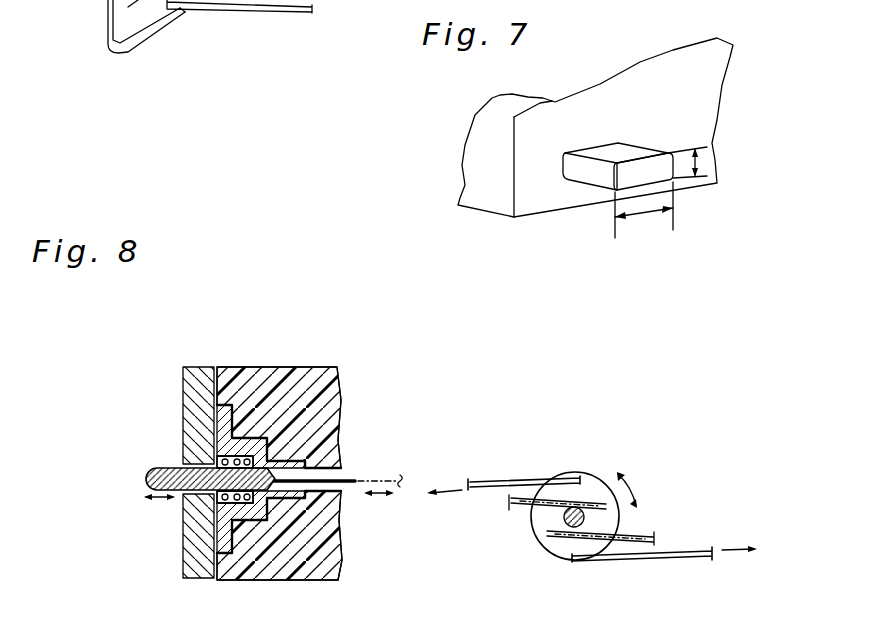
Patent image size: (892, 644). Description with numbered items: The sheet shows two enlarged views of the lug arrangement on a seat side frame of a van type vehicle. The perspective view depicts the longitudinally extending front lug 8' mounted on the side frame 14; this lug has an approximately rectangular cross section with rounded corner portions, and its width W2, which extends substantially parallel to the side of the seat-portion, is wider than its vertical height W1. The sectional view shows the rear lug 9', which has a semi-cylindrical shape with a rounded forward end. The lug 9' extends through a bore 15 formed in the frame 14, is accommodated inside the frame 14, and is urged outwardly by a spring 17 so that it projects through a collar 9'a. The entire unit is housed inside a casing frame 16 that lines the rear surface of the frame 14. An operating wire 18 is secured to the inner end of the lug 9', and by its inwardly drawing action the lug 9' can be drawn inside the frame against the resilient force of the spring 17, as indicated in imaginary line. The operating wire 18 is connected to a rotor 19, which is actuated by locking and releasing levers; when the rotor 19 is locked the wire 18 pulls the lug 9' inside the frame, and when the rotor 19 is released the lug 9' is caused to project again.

In FIG. 7, the front lug 8' is at (632, 127).
In FIG. 7, the side frame 14 is at (540, 195).
In FIG. 8, the side frame 14 is at (183, 396).
In FIG. 7, the vertical height W1 is at (698, 166).
In FIG. 7, the width W2 is at (643, 219).
In FIG. 8, the bore 15 is at (217, 462).
In FIG. 8, the casing frame 16 is at (228, 406).
In FIG. 8, the spring 17 is at (222, 518).
In FIG. 8, the rear lug 9' is at (177, 465).
In FIG. 8, the collar 9'a is at (151, 519).
In FIG. 8, the operating wire 18 is at (350, 480).
In FIG. 8, the rotor 19 is at (598, 488).